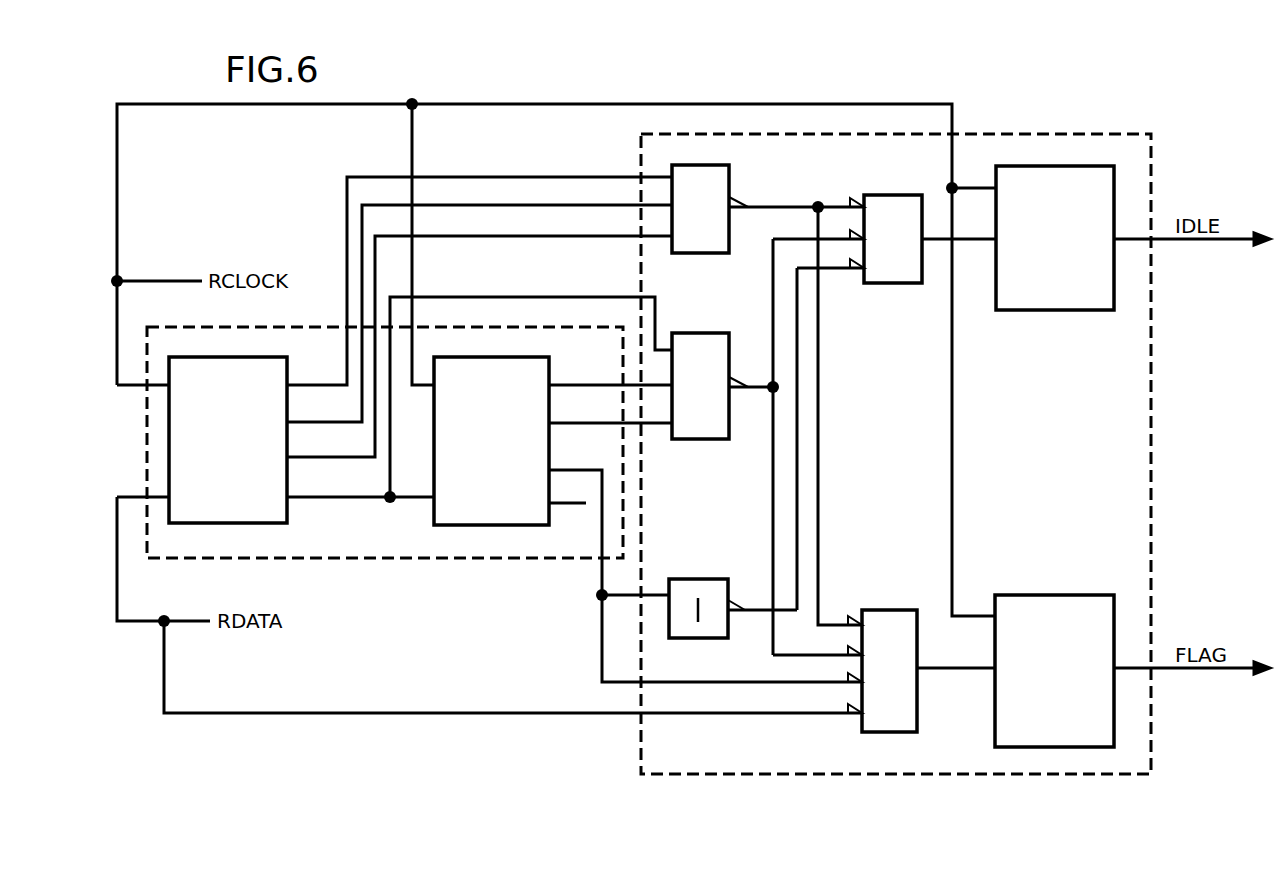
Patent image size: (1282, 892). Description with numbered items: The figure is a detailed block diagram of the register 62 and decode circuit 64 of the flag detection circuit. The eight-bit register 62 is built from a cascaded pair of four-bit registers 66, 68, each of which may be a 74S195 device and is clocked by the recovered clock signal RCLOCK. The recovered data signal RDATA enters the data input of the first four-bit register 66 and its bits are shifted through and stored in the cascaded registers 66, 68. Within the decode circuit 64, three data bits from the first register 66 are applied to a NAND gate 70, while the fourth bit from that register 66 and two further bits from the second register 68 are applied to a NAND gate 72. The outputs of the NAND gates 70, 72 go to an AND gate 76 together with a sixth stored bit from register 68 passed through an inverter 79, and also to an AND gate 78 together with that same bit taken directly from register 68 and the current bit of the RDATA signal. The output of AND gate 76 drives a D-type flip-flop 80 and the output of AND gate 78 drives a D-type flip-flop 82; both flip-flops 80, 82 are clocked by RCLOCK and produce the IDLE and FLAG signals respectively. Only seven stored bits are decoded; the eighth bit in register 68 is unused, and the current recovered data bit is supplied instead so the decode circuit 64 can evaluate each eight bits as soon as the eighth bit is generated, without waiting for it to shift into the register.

The register 62 is at (508, 560).
The decode circuit 64 is at (1027, 134).
The four-bit register 66 is at (287, 523).
The four-bit register 68 is at (434, 525).
The NAND gate 70 is at (729, 175).
The NAND gate 72 is at (687, 333).
The AND gate 76 is at (880, 195).
The AND gate 78 is at (895, 610).
The inverter 79 is at (713, 579).
The D-type flip-flop 80 is at (1077, 312).
The D-type flip-flop 82 is at (1063, 595).